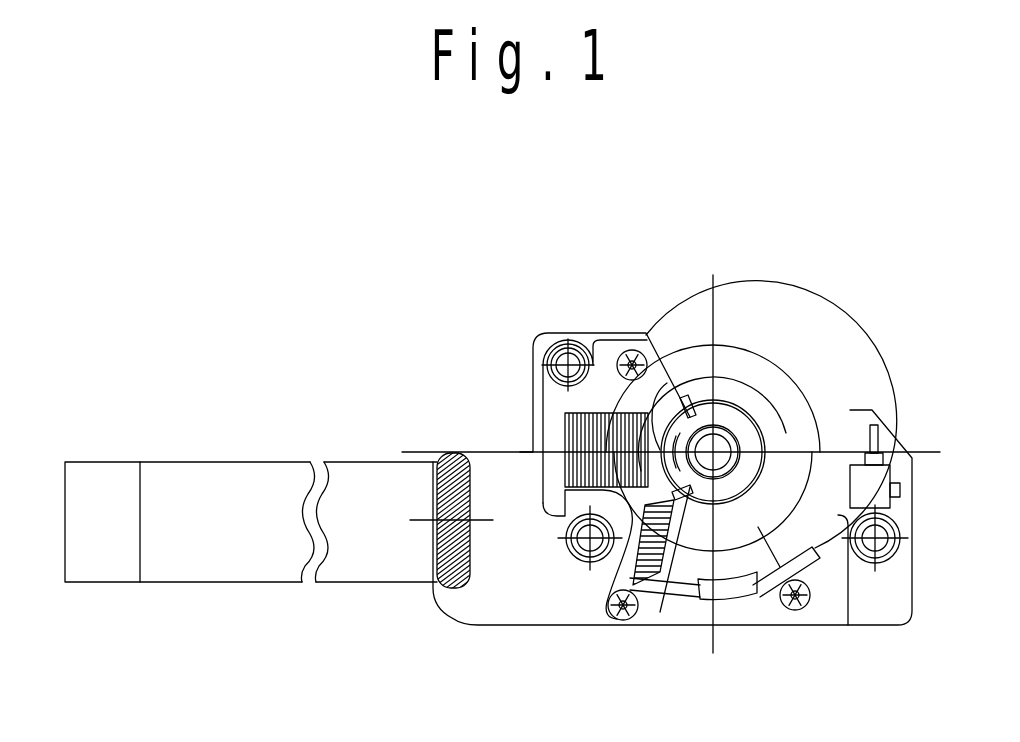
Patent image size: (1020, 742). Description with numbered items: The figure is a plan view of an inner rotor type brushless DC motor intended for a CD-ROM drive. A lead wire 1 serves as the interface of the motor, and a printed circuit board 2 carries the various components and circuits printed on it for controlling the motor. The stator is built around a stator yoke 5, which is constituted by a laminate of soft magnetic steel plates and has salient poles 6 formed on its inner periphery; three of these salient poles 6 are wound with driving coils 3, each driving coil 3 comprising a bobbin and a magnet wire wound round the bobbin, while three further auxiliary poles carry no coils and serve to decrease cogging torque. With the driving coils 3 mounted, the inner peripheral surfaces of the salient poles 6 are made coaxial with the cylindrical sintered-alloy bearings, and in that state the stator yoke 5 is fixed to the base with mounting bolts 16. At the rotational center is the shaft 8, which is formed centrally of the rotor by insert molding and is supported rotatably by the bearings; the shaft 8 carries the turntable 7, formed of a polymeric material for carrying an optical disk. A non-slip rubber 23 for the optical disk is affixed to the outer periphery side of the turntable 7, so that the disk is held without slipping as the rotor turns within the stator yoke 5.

The lead wire 1 is at (185, 495).
The printed circuit board 2 is at (482, 477).
The driving coil 3 is at (567, 342).
The stator yoke 5 is at (599, 385).
The salient poles 6 is at (674, 388).
The turntable 7 is at (727, 365).
The shaft 8 is at (718, 430).
The mounting bolts 16 is at (790, 610).
The non-slip rubber 23 is at (803, 360).